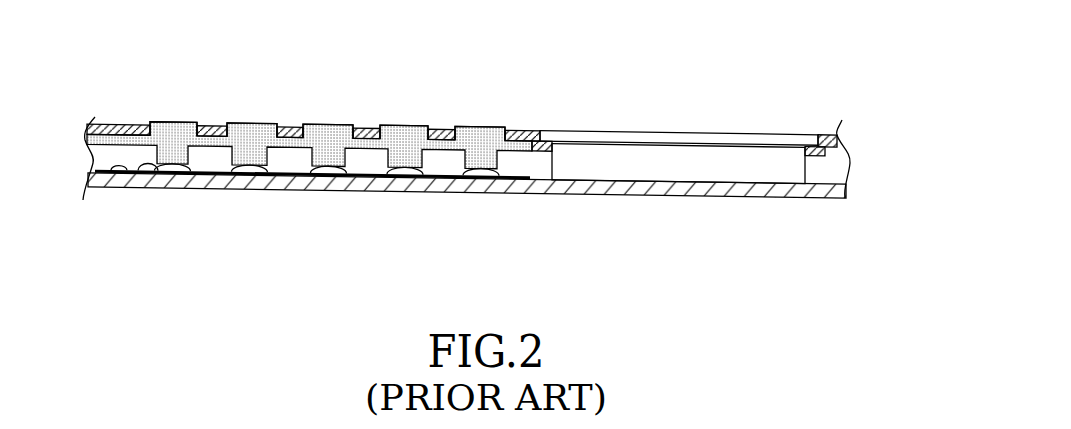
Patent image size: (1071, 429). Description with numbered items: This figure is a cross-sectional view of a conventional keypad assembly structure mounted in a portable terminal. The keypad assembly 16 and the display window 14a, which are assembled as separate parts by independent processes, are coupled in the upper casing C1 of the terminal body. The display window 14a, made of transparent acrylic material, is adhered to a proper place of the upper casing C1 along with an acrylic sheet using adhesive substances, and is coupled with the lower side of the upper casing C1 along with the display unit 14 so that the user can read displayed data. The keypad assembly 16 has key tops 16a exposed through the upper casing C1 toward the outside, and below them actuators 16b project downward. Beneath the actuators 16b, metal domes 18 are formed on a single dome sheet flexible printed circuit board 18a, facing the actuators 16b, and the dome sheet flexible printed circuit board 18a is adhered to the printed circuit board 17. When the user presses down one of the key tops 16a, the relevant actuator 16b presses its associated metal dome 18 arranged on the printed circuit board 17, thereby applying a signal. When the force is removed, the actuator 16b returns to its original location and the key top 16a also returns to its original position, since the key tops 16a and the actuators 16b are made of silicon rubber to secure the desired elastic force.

The upper casing C1 is at (110, 123).
The display unit 14 is at (608, 170).
The display window 14a is at (602, 131).
The keypad assembly 16 is at (184, 103).
The key tops 16a is at (240, 122).
The actuators 16b is at (253, 182).
The printed circuit board 17 is at (373, 183).
The metal domes 18 is at (147, 172).
The dome sheet flexible printed circuit board 18a is at (118, 170).